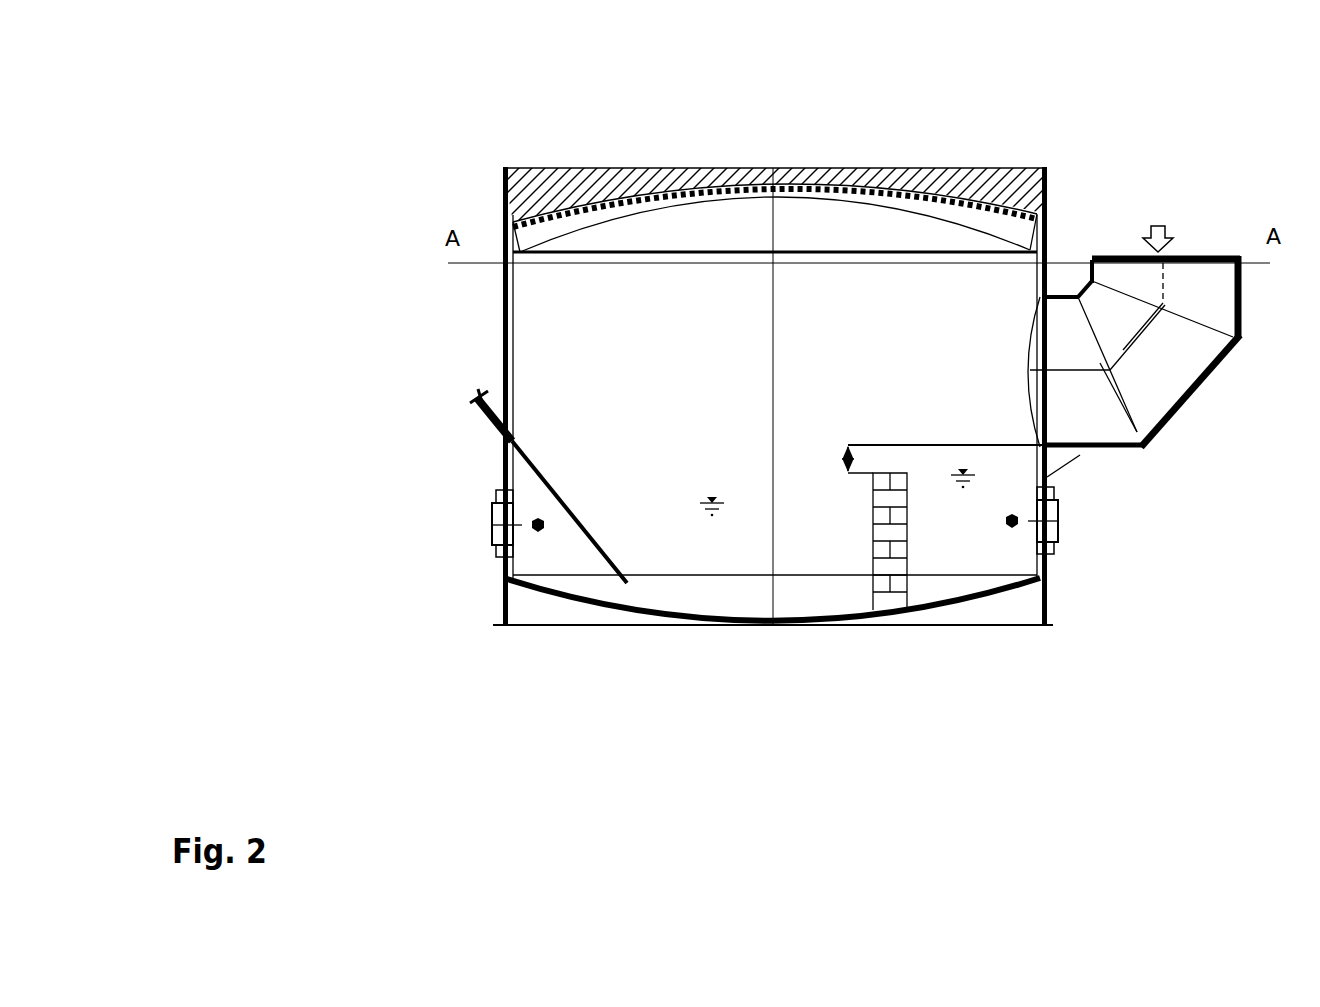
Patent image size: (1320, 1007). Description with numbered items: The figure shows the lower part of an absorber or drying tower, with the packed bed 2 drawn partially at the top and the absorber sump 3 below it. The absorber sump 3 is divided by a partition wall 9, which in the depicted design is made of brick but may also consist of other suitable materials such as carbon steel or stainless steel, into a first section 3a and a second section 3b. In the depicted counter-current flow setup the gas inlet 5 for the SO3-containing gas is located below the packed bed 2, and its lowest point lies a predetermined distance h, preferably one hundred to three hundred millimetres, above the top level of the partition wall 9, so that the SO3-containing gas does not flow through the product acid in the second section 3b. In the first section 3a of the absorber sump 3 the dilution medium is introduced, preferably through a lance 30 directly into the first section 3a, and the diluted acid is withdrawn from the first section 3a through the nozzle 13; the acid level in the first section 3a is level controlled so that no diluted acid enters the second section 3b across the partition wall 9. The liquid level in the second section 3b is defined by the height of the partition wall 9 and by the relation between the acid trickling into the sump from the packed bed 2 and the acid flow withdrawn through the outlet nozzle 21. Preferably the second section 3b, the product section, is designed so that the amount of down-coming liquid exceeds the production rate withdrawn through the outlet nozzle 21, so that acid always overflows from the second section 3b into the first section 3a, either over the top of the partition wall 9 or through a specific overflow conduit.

The packed bed 2 is at (959, 158).
The absorber sump 3 is at (543, 361).
The first section 3a is at (683, 549).
The second section 3b is at (989, 552).
The gas inlet 5 is at (1152, 391).
The partition wall 9 is at (889, 582).
The nozzle 13 is at (485, 523).
The outlet nozzle 21 is at (1067, 522).
The lance 30 is at (470, 446).
The predetermined distance h is at (920, 457).